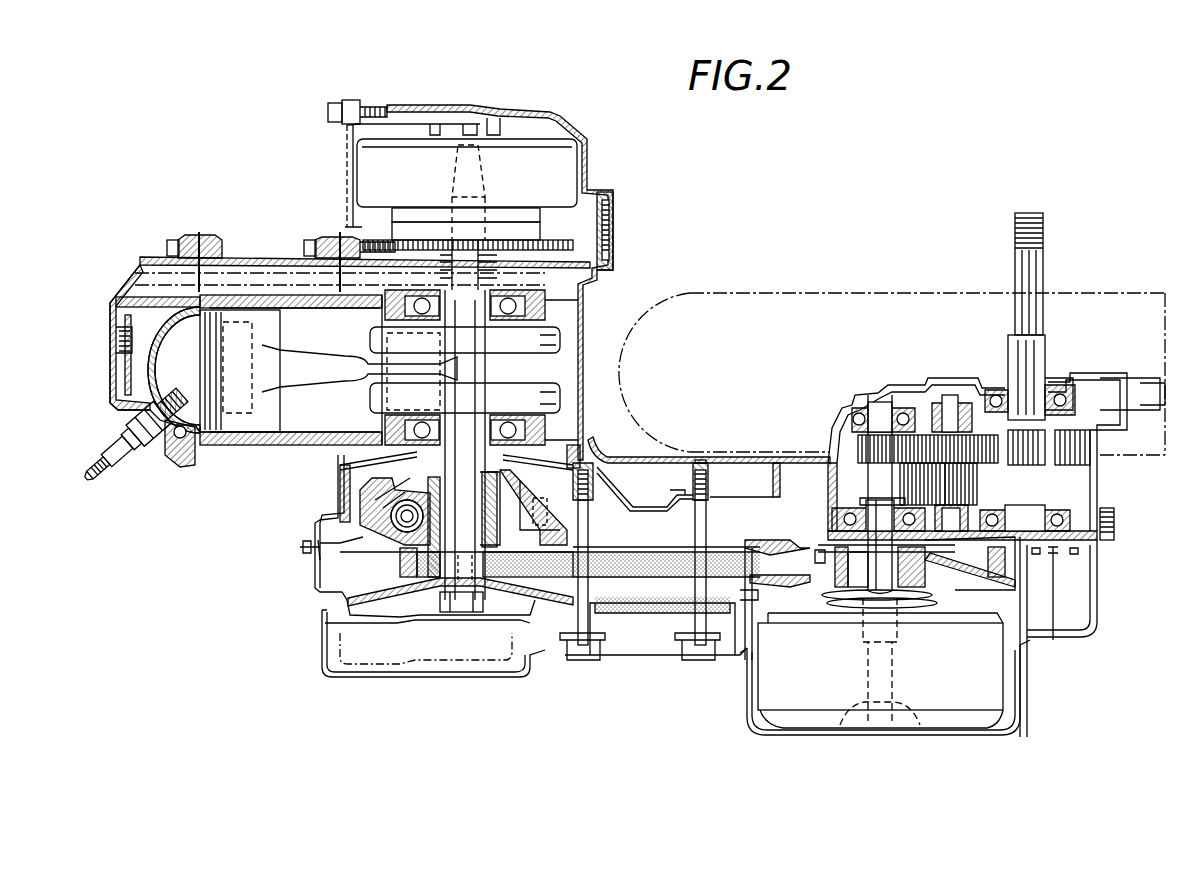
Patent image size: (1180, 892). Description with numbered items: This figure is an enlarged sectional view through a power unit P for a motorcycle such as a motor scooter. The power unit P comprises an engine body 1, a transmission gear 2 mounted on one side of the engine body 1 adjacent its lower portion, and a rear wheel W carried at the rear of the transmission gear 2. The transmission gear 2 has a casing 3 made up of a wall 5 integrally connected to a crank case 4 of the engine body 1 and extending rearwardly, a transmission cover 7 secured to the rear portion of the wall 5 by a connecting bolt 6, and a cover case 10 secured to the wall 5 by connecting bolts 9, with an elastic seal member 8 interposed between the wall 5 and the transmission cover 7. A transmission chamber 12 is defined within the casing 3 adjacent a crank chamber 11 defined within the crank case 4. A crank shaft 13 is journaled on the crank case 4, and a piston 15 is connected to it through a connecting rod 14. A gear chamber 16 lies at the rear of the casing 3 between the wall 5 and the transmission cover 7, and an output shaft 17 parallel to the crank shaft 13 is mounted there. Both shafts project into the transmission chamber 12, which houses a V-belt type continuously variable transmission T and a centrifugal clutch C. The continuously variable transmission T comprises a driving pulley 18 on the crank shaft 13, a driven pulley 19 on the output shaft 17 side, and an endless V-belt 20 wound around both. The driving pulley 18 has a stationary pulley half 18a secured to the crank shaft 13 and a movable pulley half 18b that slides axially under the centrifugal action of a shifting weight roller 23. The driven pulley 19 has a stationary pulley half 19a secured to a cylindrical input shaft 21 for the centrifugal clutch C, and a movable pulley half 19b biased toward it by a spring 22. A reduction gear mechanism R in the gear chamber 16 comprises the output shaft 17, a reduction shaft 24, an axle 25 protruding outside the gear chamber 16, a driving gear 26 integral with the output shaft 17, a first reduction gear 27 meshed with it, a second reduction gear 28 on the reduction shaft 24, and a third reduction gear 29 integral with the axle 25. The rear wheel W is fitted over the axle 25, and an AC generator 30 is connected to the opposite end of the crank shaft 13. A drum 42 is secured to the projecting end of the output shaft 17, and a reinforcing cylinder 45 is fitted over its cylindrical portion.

The engine body 1 is at (241, 266).
The transmission gear 2 is at (696, 452).
The casing 3 is at (640, 656).
The crank case 4 is at (575, 458).
The wall 5 is at (742, 456).
The connecting bolt 6 is at (1108, 535).
The transmission cover 7 is at (832, 528).
The elastic seal member 8 is at (1100, 558).
The connecting bolts 9 is at (580, 662).
The cover case 10 is at (1052, 638).
The crank chamber 11 is at (420, 370).
The transmission chamber 12 is at (645, 504).
The crank shaft 13 is at (468, 426).
The connecting rod 14 is at (313, 375).
The piston 15 is at (257, 392).
The gear chamber 16 is at (921, 484).
The output shaft 17 is at (878, 494).
The driving pulley 18 is at (278, 583).
The stationary pulley half 18a is at (322, 597).
The movable pulley half 18b is at (320, 560).
The driven pulley 19 is at (745, 612).
The stationary pulley half 19a is at (775, 545).
The movable pulley half 19b is at (780, 580).
The endless V-belt 20 is at (617, 552).
The input shaft 21 is at (900, 570).
The spring 22 is at (925, 605).
The shifting weight roller 23 is at (408, 508).
The reduction shaft 24 is at (952, 463).
The axle 25 is at (1030, 413).
The driving gear 26 is at (868, 450).
The first reduction gear 27 is at (1086, 316).
The second reduction gear 28 is at (945, 488).
The third reduction gear 29 is at (1063, 465).
The AC generator 30 is at (527, 148).
The drum 42 is at (970, 727).
The reinforcing cylinder 45 is at (1000, 632).
The centrifugal clutch C is at (805, 735).
The power unit P is at (533, 668).
The reduction gear mechanism R is at (835, 452).
The continuously variable transmission T is at (558, 588).
The rear wheel W is at (806, 290).